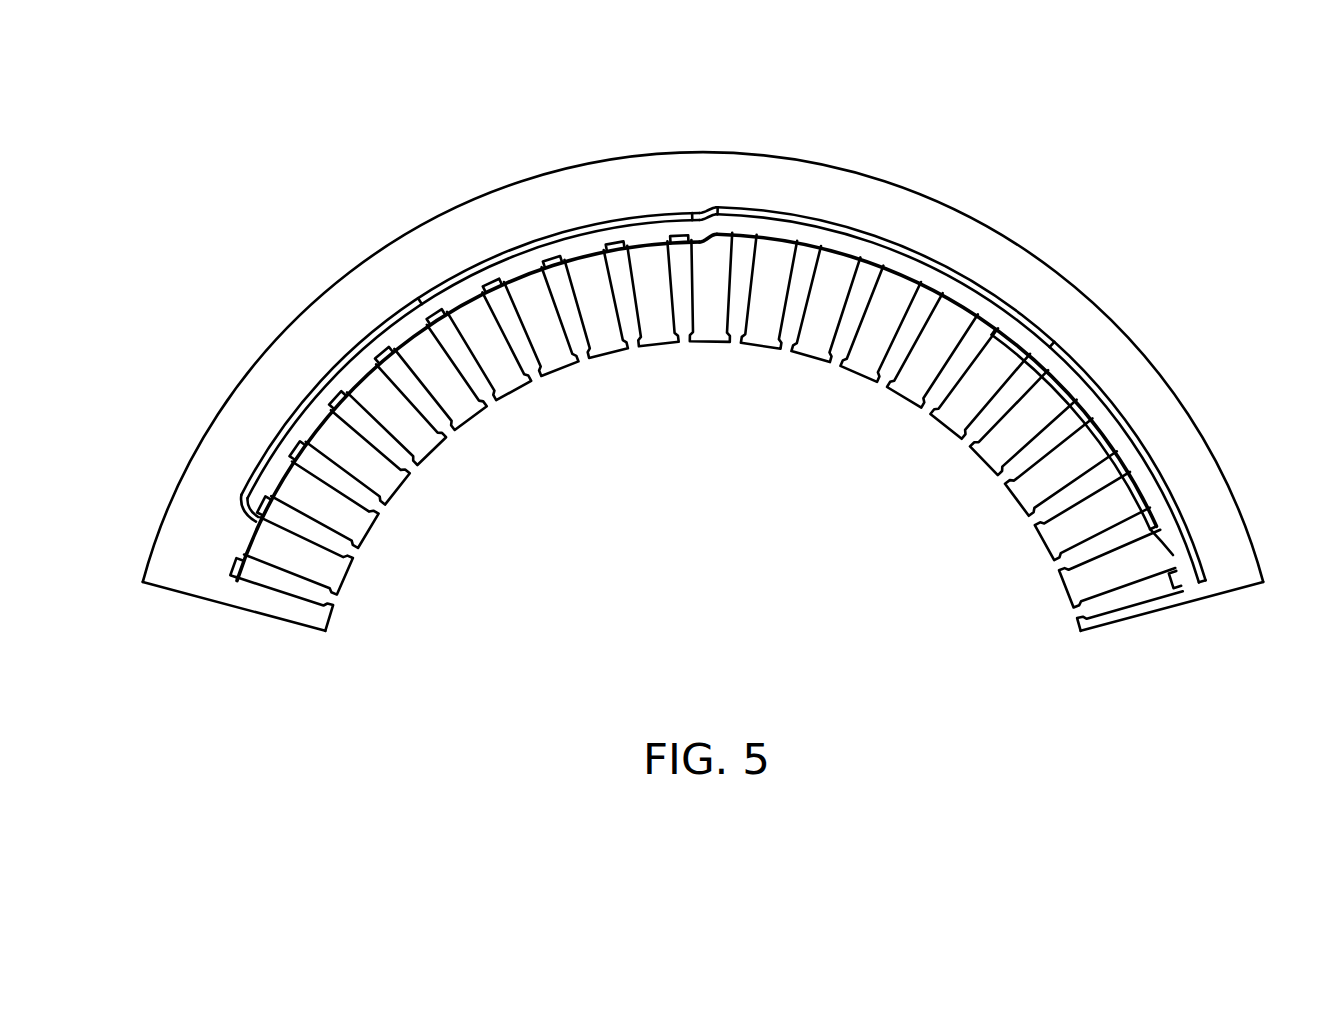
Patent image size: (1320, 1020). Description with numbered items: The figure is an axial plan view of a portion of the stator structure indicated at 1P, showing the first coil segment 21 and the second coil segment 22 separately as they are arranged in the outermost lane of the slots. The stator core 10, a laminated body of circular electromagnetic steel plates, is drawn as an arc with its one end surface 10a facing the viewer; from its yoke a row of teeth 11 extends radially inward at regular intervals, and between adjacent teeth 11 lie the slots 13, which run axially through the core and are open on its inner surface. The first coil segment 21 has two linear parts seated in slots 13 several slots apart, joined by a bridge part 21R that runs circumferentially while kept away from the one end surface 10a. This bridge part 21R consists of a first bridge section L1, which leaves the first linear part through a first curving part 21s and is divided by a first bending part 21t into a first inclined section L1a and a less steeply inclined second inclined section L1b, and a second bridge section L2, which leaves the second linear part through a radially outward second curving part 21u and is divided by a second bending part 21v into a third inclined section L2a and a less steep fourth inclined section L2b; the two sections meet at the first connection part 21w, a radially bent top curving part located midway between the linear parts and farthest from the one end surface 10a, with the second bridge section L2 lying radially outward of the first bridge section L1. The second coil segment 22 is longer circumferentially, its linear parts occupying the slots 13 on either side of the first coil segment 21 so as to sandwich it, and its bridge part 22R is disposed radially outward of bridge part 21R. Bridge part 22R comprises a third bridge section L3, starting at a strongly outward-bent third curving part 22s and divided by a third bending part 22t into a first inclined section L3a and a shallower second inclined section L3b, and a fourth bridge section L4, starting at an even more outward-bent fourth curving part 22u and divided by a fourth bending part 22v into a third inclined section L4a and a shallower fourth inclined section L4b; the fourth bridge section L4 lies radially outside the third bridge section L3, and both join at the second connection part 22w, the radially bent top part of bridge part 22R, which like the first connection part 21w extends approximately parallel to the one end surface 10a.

The stator segment assembly 1P is at (244, 190).
The stator core 10 is at (190, 487).
The one end surface 10a is at (167, 574).
The teeth 11 is at (362, 525).
The slot 13 is at (345, 557).
The first coil segment 21 is at (650, 219).
The first curving part 21s is at (260, 512).
The first bending part 21t is at (420, 301).
The bridge part 21R is at (692, 217).
The first connection part 21w is at (718, 208).
The second bending part 21v is at (994, 331).
The second curving part 21u is at (1158, 527).
The second coil segment 22 is at (630, 245).
The third curving part 22s is at (232, 560).
The third bending part 22t is at (428, 320).
The bridge part 22R is at (660, 241).
The second connection part 22w is at (710, 237).
The fourth bending part 22v is at (1052, 344).
The fourth curving part 22u is at (1192, 578).
The first bridge section L1 is at (334, 407).
The first inclined section L1a is at (400, 365).
The second inclined section L1b is at (528, 396).
The second bridge section L2 is at (941, 293).
The third inclined section L2a is at (1050, 440).
The fourth inclined section L2b is at (828, 258).
The third bridge section L3 is at (302, 410).
The first inclined section L3a is at (352, 382).
The second inclined section L3b is at (577, 362).
The fourth bridge section L4 is at (948, 297).
The third inclined section L4a is at (1068, 548).
The fourth inclined section L4b is at (930, 270).